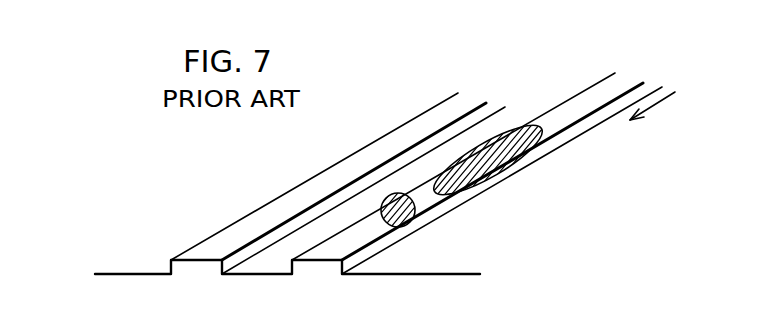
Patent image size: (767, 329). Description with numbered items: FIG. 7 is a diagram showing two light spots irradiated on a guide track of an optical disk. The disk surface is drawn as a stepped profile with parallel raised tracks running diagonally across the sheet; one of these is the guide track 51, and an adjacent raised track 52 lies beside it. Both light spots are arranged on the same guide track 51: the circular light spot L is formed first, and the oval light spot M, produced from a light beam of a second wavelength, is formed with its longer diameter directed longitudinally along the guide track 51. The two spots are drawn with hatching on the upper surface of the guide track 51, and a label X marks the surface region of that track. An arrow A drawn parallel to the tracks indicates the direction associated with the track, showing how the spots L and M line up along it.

The first land/rib of prior art recording medium 52 is at (428, 109).
The guide track 51 is at (547, 112).
The track surface region X is at (575, 112).
The circular light spot L is at (401, 207).
The elliptical light spot M is at (490, 162).
The direction of relative movement A is at (667, 100).